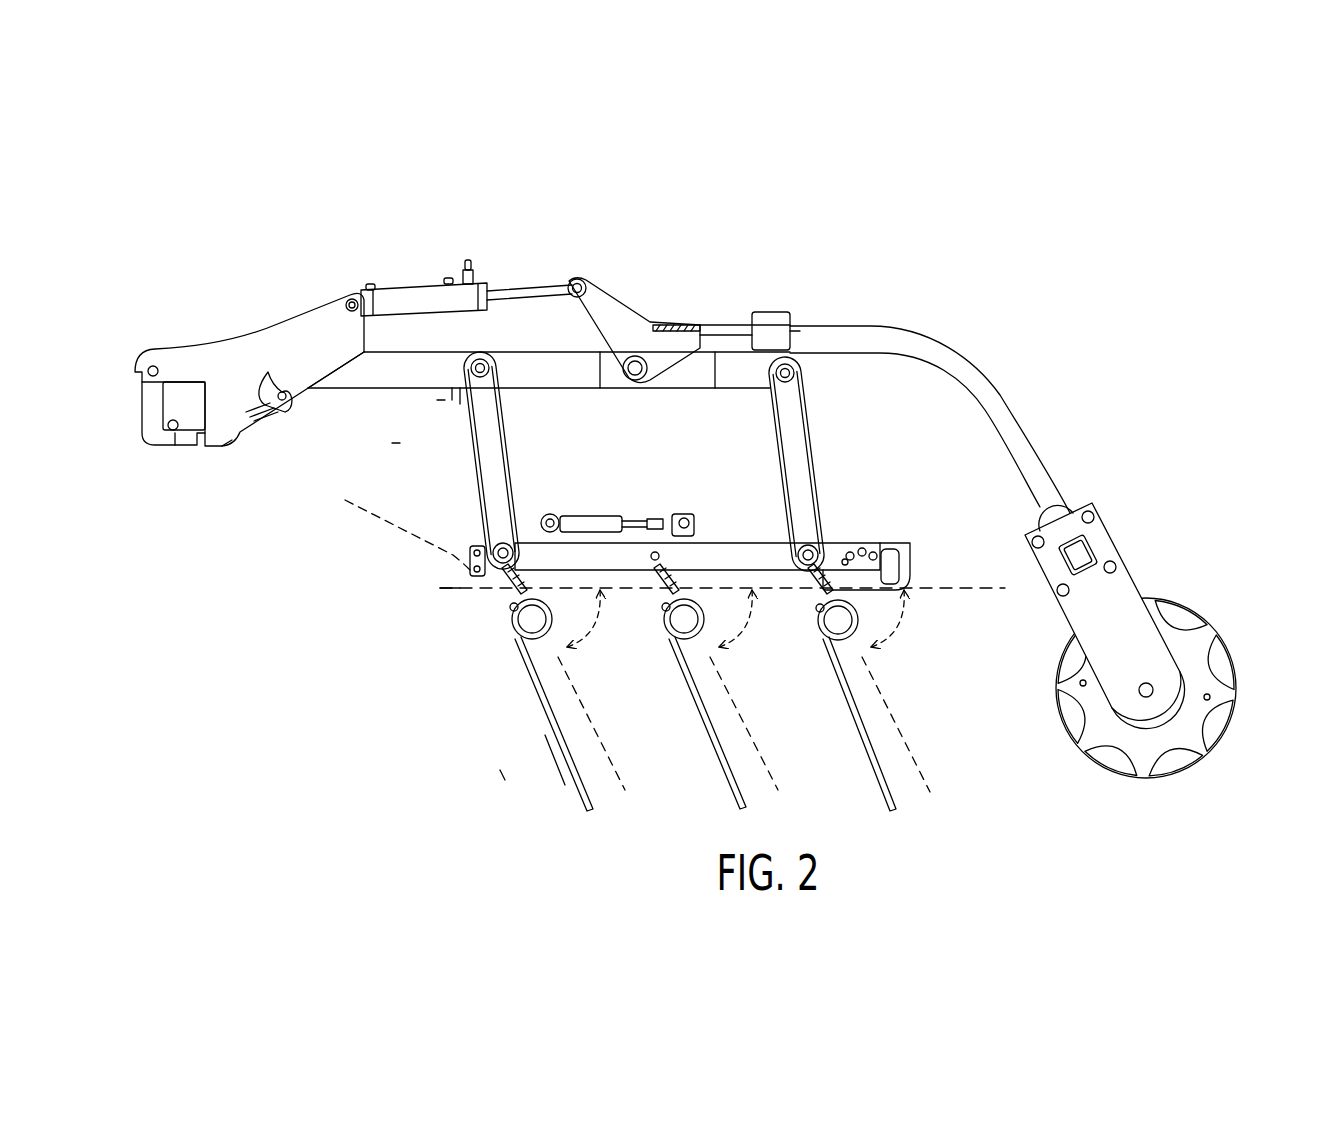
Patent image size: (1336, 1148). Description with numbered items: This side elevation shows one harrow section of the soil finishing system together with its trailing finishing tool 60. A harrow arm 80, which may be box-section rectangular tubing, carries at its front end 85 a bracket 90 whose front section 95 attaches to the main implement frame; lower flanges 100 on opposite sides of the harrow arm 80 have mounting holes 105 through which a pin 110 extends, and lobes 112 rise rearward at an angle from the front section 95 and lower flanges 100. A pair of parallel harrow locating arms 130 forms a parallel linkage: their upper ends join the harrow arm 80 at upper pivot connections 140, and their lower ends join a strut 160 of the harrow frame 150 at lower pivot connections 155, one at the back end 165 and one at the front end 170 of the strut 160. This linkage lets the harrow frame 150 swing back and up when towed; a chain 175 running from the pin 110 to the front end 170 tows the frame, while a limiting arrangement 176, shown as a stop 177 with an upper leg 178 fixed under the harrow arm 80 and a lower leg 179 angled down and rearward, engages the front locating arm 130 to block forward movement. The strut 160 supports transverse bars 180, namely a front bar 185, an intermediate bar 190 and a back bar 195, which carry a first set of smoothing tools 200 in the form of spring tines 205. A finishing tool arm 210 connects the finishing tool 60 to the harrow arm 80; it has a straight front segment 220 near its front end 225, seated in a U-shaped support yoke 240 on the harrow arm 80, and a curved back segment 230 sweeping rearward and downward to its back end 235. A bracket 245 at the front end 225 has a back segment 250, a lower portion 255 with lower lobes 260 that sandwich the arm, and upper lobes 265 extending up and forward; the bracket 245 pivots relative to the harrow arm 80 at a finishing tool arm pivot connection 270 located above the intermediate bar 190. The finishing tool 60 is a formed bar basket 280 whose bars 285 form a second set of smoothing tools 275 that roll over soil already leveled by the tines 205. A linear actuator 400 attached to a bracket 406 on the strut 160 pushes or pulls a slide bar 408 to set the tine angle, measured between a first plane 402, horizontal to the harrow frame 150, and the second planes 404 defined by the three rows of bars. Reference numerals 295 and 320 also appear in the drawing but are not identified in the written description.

The finishing tool 60 is at (1255, 613).
The harrow arm 80 is at (348, 398).
The front end 85 is at (318, 388).
The bracket 90 is at (221, 290).
The front section 95 is at (122, 425).
The lower flanges 100 is at (215, 438).
The mounting holes 105 is at (268, 380).
The pin 110 is at (231, 442).
The lobes 112 is at (335, 328).
The harrow locating arms 130 is at (495, 470).
The upper harrow locating arm pivot connections 140 is at (462, 368).
The harrow frame 150 is at (330, 643).
The lower harrow locating arm pivot connections 155 is at (487, 590).
The strut 160 is at (728, 550).
The back end 165 is at (925, 540).
The front end 170 is at (430, 565).
The chain 175 is at (380, 520).
The limiting arrangement 176 is at (392, 443).
The stop 177 is at (437, 410).
The upper leg 178 is at (452, 400).
The lower leg 179 is at (460, 404).
The bars 180 is at (685, 619).
The front bar 185 is at (520, 595).
The intermediate bar 190 is at (672, 595).
The back bar 195 is at (827, 595).
The first set of smoothing tools 200 is at (495, 770).
The tines 205 is at (568, 762).
The finishing tool arm 210 is at (957, 198).
The front segment 220 is at (747, 265).
The front end 225 is at (730, 206).
The back segment 230 is at (1025, 380).
The back end 235 is at (1090, 493).
The support yoke 240 is at (802, 312).
The bracket 245 is at (556, 320).
The back segment 250 is at (663, 323).
The lower portion 255 is at (635, 395).
The lower lobes 260 is at (720, 370).
The upper lobes 265 is at (590, 274).
The finishing tool arm pivot connection 270 is at (605, 375).
The second set of smoothing tools 275 is at (1240, 762).
The formed bar baskets 280 is at (1165, 802).
The bars 285 is at (1117, 765).
The hydraulic fitting 295 is at (432, 250).
The cylinder rod 320 is at (548, 278).
The linear actuator 400 is at (630, 515).
The first plane 402 is at (975, 600).
The second planes 404 is at (607, 760).
The bracket 406 is at (568, 518).
The slide bar 408 is at (705, 540).